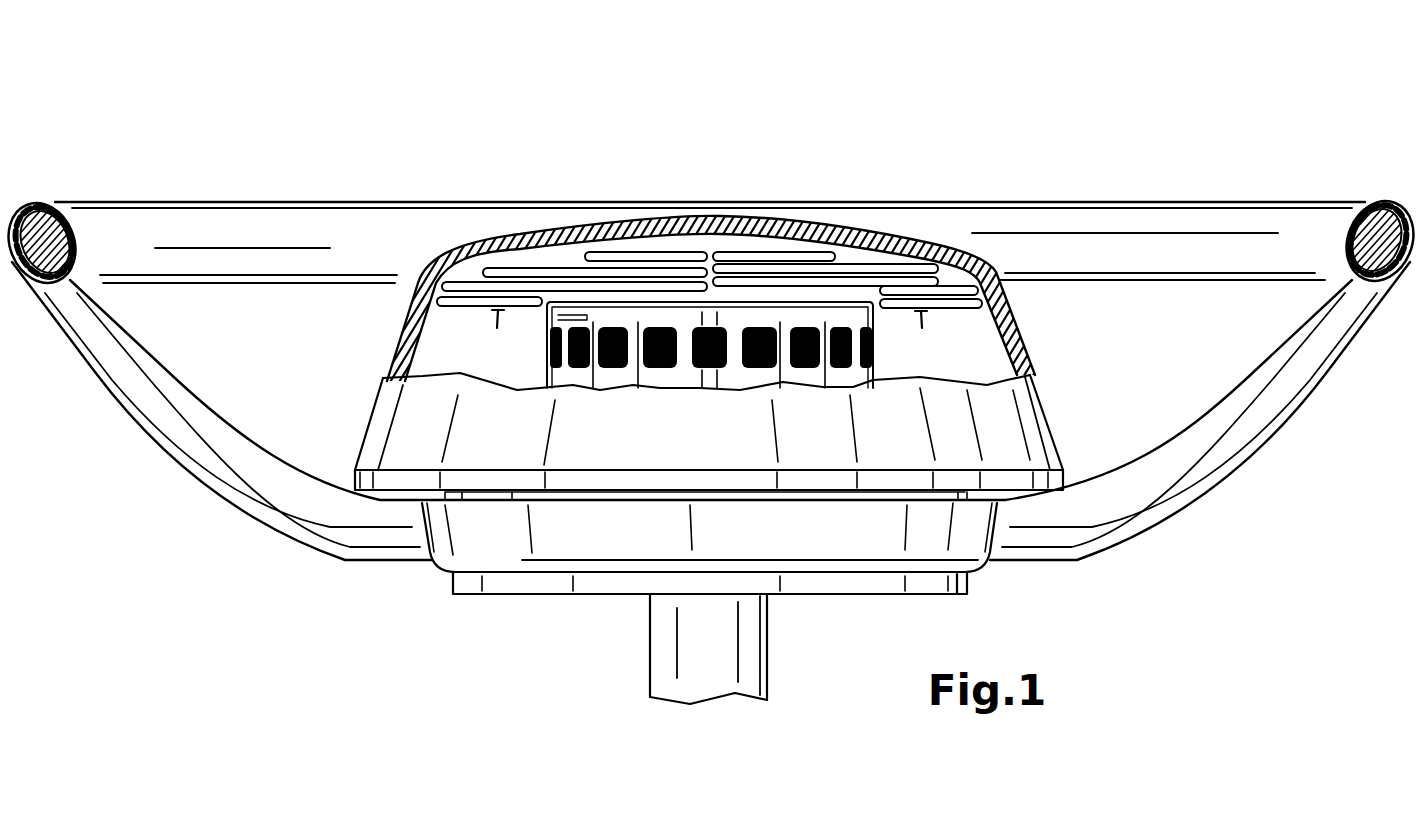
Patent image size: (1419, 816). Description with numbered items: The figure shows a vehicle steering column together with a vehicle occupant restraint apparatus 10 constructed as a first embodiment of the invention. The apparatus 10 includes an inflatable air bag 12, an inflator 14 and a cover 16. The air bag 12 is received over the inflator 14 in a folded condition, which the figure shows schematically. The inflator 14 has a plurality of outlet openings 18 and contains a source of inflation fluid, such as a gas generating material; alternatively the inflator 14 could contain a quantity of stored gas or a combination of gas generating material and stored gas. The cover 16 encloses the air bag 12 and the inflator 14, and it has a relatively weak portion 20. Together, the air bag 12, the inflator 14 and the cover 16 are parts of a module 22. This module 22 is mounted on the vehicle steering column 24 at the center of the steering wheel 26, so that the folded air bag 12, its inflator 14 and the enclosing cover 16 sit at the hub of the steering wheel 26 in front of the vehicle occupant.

The vehicle occupant restraint apparatus 10 is at (455, 150).
The inflatable air bag 12 is at (805, 267).
The inflator 14 is at (799, 289).
The cover 16 is at (584, 221).
The outlet openings 18 is at (618, 368).
The relatively weak portion 20 is at (708, 221).
The module 22 is at (350, 361).
The vehicle steering column 24 is at (648, 632).
The steering wheel 26 is at (282, 221).